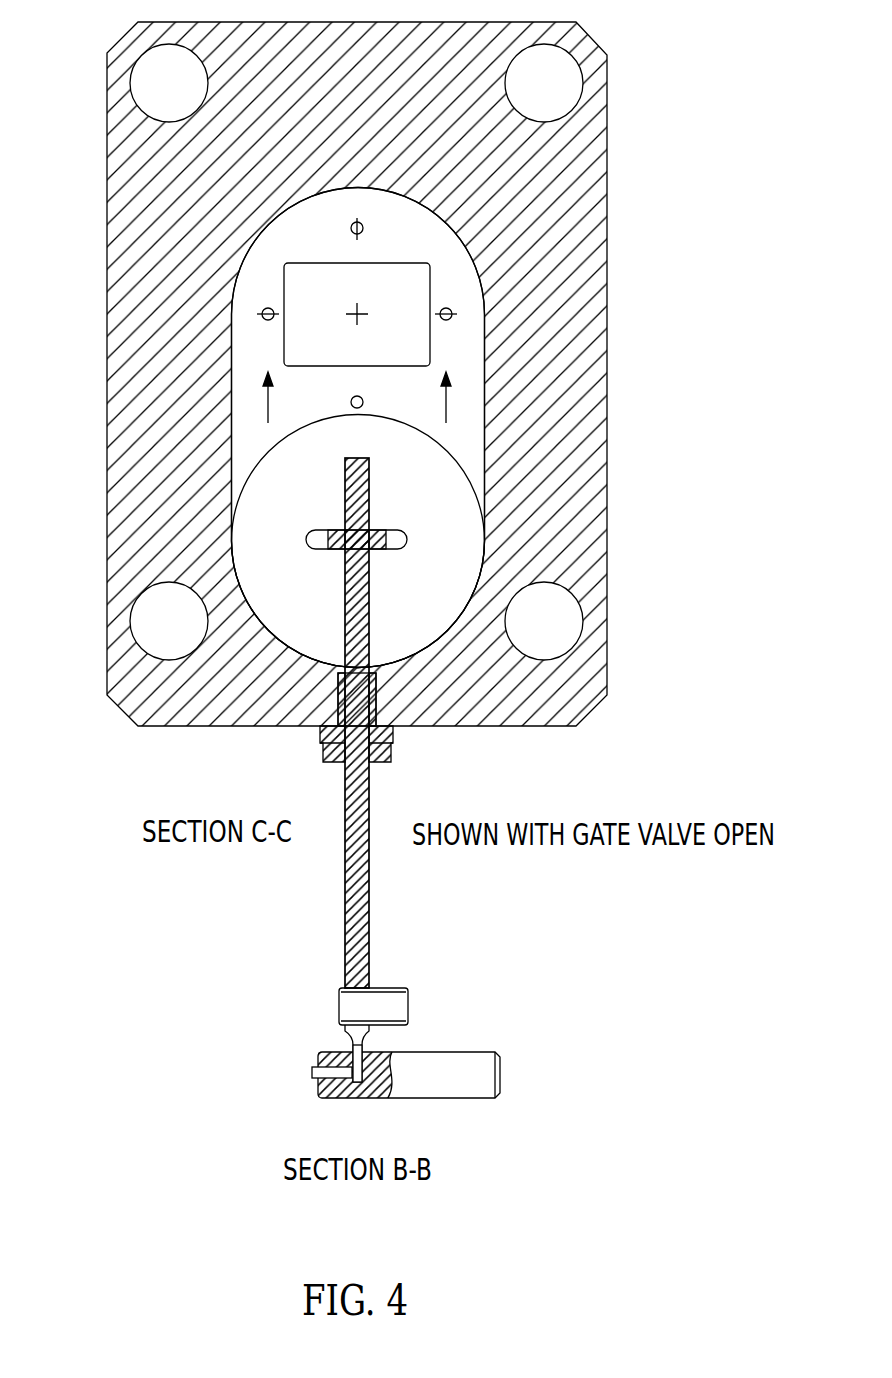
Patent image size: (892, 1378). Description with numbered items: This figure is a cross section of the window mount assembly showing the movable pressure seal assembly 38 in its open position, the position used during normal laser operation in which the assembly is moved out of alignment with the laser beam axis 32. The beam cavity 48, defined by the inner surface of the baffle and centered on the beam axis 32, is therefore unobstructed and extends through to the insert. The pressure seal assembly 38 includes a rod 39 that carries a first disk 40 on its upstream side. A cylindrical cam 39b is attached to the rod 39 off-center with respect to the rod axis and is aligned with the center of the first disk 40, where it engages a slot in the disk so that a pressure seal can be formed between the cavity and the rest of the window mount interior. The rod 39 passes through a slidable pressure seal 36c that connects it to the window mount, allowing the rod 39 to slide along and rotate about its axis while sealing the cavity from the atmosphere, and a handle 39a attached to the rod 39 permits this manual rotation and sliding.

The laser beam axis 32 is at (357, 314).
The beam cavity 48 is at (421, 285).
The first disk 40 is at (436, 607).
The rod 39 is at (371, 879).
The cam 39b is at (407, 532).
The slidable pressure seal 36c is at (416, 770).
The pressure seal assembly 38 is at (298, 974).
The handle 39a is at (466, 1052).